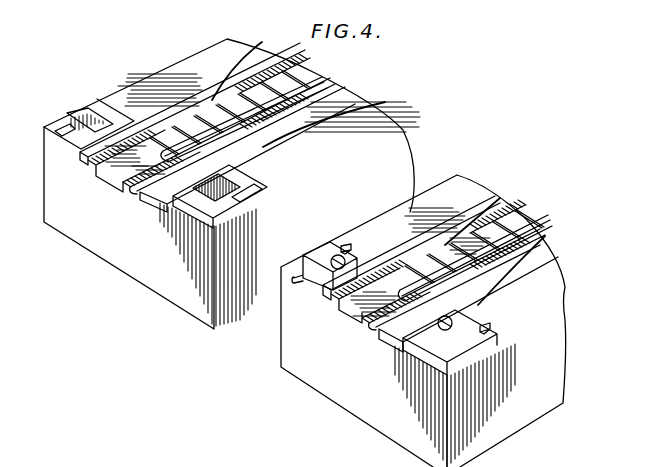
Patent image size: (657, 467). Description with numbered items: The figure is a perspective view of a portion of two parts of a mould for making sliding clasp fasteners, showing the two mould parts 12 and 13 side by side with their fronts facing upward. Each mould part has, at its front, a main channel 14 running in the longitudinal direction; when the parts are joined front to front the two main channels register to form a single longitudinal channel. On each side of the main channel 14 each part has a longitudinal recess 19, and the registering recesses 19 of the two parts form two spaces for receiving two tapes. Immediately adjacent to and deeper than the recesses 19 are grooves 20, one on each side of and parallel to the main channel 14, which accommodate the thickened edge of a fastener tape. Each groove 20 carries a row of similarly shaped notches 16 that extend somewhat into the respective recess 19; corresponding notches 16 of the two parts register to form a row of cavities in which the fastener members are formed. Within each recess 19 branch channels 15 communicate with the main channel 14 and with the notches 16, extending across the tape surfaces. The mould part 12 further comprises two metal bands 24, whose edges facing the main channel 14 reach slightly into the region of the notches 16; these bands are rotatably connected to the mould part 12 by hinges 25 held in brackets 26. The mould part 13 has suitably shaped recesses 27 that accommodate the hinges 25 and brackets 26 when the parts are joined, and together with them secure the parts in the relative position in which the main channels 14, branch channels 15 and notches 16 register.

The mould part 12 is at (355, 400).
The mould part 13 is at (153, 262).
The main channel 14 is at (325, 88).
The branch channels 15 is at (389, 165).
The notches 16 is at (200, 98).
The recesses 19 is at (113, 168).
The grooves 20 is at (93, 166).
The metal bands 24 is at (322, 283).
The hinges 25 is at (344, 245).
The brackets 26 is at (331, 255).
The recesses 27 is at (85, 120).